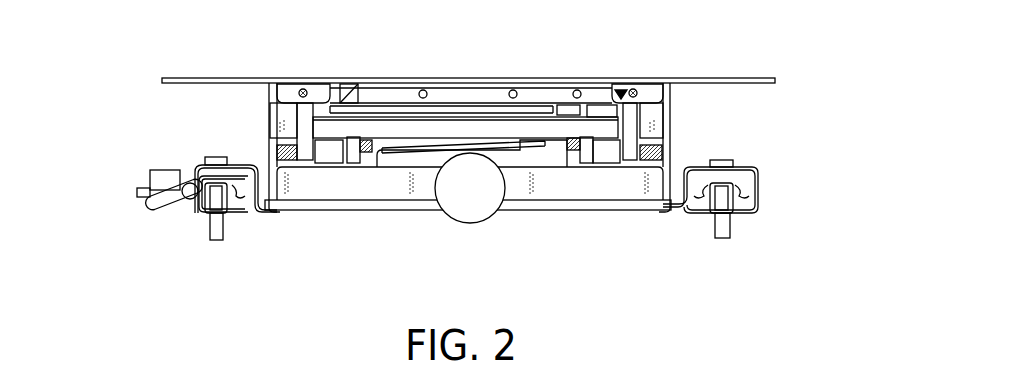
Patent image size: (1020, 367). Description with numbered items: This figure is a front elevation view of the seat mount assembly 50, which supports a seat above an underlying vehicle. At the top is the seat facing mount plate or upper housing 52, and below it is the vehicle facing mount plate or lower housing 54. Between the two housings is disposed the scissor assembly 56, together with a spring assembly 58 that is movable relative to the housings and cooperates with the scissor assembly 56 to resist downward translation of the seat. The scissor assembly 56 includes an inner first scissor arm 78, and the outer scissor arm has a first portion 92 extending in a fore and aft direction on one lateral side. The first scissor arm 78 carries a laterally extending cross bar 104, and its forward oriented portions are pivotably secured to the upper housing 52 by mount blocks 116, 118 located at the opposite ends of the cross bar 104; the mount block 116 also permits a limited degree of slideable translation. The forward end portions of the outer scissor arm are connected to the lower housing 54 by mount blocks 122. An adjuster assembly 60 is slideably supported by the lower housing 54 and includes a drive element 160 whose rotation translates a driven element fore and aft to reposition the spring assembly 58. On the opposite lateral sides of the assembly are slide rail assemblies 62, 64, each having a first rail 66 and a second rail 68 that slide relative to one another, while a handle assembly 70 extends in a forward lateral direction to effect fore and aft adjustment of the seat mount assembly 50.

The seat mount assembly 50 is at (803, 53).
The upper housing 52 is at (708, 78).
The lower housing 54 is at (266, 212).
The scissor assembly 56 is at (621, 90).
The spring assembly 58 is at (492, 133).
The adjuster assembly 60 is at (442, 221).
The slide rail assembly 62 is at (148, 294).
The slide rail assembly 64 is at (753, 224).
The first rail 66 is at (195, 167).
The second rail 68 is at (208, 213).
The handle assembly 70 is at (165, 208).
The first scissor arm 78 is at (357, 100).
The first portion 92 is at (353, 160).
The cross bar 104 is at (445, 122).
The mount block 116 is at (662, 123).
The mount block 118 is at (282, 120).
The mount block 122 is at (333, 158).
The drive element 160 is at (467, 198).